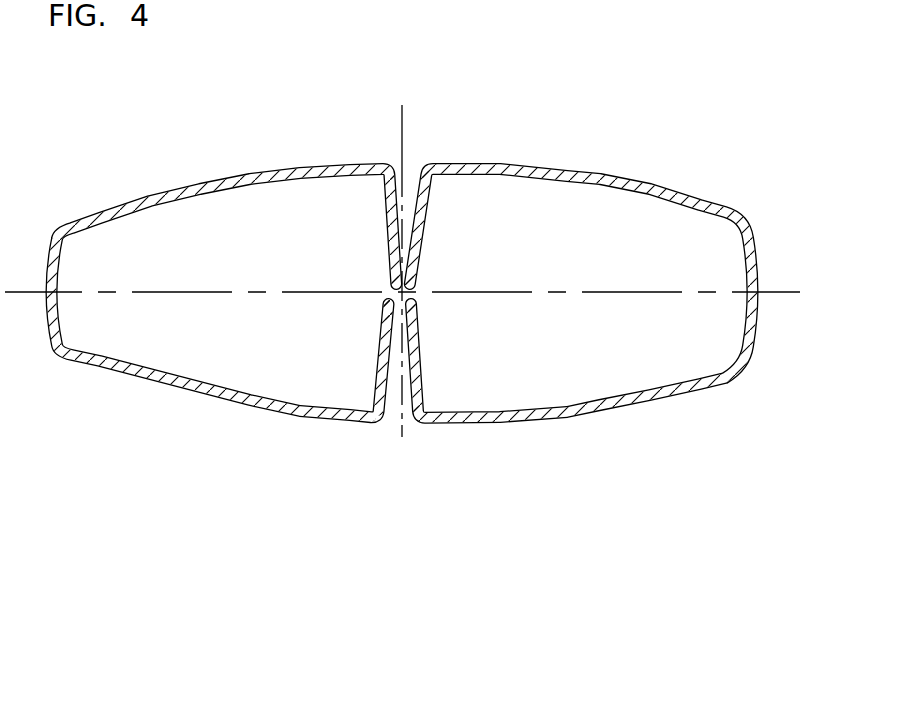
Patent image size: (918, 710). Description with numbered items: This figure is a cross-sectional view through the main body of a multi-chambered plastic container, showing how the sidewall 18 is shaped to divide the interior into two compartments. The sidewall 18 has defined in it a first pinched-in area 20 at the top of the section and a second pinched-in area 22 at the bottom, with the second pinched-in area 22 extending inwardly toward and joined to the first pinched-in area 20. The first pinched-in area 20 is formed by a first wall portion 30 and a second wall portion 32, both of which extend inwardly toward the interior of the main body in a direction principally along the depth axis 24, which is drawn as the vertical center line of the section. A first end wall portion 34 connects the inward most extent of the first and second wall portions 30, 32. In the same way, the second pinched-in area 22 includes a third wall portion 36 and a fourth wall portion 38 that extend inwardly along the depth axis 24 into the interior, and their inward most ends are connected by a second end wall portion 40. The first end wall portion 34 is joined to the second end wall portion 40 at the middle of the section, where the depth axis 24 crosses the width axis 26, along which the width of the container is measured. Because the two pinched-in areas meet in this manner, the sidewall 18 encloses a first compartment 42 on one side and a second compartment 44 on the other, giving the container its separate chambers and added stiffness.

The sidewall 18 is at (423, 281).
The first pinched-in area 20 is at (416, 157).
The second pinched-in area 22 is at (390, 420).
The depth axis 24 is at (400, 137).
The width axis 26 is at (775, 293).
The first wall portion 30 is at (385, 247).
The second wall portion 32 is at (430, 240).
The first end wall portion 34 is at (403, 293).
The third wall portion 36 is at (399, 295).
The fourth wall portion 38 is at (420, 348).
The second end wall portion 40 is at (398, 293).
The first compartment 42 is at (167, 258).
The second compartment 44 is at (698, 243).